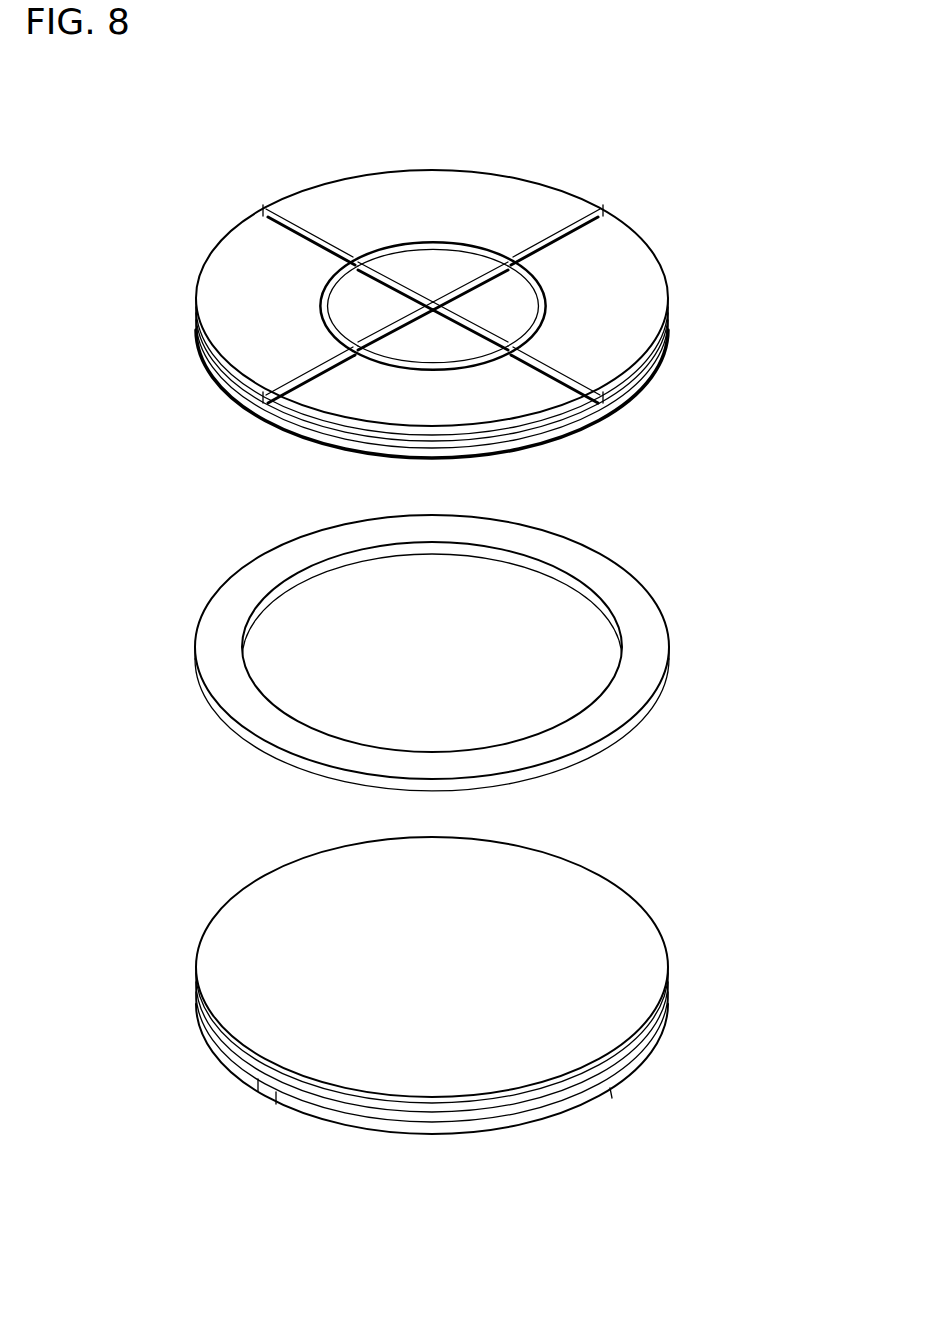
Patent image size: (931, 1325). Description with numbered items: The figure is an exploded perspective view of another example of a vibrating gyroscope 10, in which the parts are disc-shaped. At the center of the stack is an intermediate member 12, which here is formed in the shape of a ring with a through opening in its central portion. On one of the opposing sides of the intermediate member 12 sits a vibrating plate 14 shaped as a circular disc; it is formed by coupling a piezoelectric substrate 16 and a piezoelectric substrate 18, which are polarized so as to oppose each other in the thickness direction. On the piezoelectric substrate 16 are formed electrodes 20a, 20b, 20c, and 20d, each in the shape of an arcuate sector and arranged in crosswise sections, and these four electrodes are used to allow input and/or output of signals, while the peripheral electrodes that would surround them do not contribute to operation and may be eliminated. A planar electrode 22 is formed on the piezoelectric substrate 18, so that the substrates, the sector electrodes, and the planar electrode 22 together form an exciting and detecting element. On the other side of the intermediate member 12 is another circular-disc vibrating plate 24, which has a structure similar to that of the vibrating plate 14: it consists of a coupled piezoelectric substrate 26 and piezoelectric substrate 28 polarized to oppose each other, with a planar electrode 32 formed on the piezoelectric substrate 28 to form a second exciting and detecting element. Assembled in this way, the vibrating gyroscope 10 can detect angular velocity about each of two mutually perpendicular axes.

The vibrating gyroscope 10 is at (228, 104).
The intermediate member 12 is at (642, 658).
The vibrating plate 14 is at (212, 424).
The piezoelectric substrate 16 is at (283, 430).
The piezoelectric substrate 18 is at (297, 438).
The electrode 20a is at (432, 270).
The electrode 20b is at (500, 307).
The electrode 20c is at (360, 307).
The electrode 20d is at (443, 345).
The planar electrode 22 is at (348, 458).
The vibrating plate 24 is at (212, 1128).
The piezoelectric substrate 26 is at (323, 1102).
The piezoelectric substrate 28 is at (288, 1108).
The planar electrode 32 is at (262, 902).